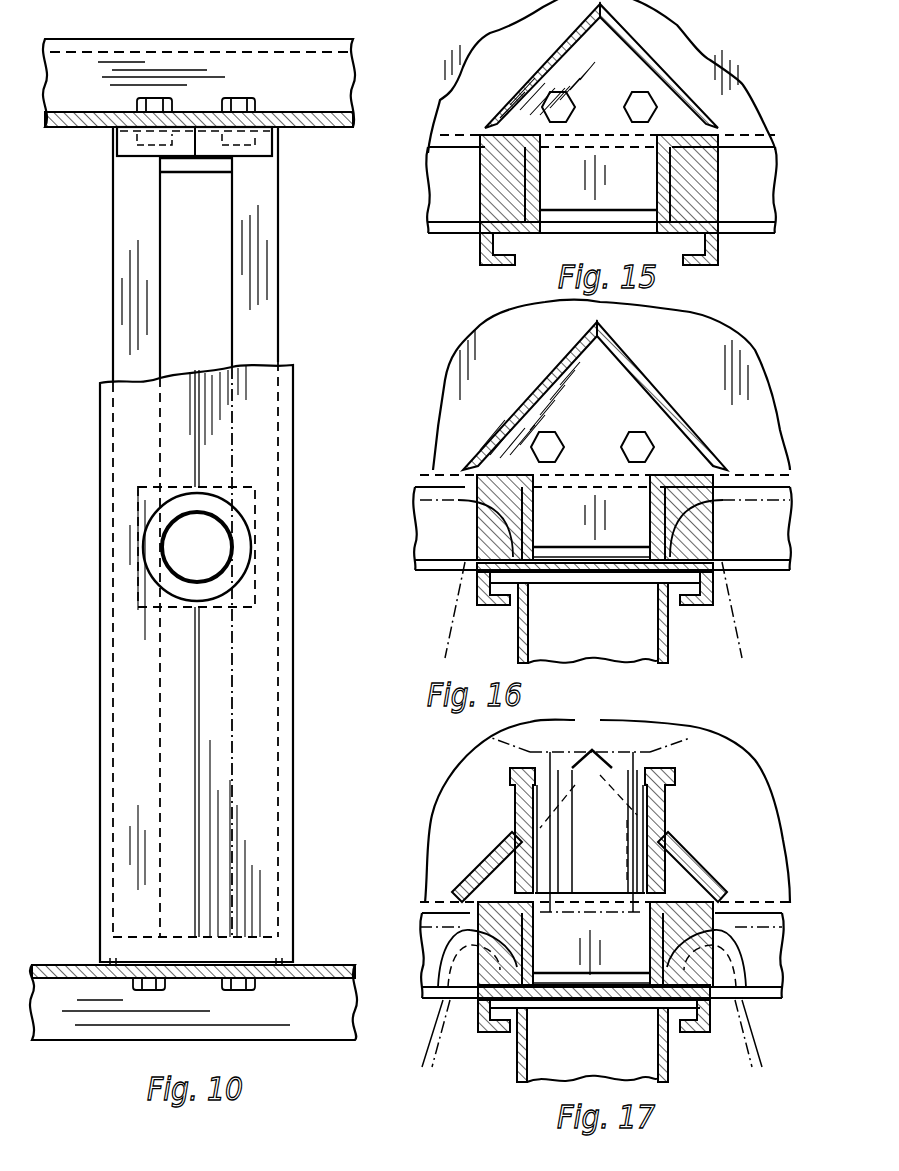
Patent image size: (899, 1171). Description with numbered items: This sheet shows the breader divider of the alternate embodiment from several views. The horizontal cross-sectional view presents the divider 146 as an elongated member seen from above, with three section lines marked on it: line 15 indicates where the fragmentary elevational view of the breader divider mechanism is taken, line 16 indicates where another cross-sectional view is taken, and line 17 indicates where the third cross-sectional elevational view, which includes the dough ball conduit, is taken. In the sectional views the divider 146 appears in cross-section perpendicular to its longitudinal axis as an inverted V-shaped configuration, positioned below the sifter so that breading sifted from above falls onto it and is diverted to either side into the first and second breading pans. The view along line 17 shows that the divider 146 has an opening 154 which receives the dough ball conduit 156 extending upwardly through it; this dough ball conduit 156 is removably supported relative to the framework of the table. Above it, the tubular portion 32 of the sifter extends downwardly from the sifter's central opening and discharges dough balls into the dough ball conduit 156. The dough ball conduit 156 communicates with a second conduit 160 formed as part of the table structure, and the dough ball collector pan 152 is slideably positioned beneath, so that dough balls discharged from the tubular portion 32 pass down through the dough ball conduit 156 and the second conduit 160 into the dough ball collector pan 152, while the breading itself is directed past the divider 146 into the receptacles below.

In FIG. 10, the section line 15- 15 is at (317, 132).
In FIG. 10, the section line 16- 16 is at (340, 397).
In FIG. 10, the section line 17- 17 is at (340, 513).
In FIG. 17, the tubular portion 32 is at (665, 795).
In FIG. 10, the divider 146 is at (132, 685).
In FIG. 16, the divider 146 is at (640, 378).
In FIG. 17, the divider 146 is at (690, 875).
In FIG. 16, the dough ball collector pan 152 is at (668, 637).
In FIG. 17, the dough ball collector pan 152 is at (517, 1068).
In FIG. 10, the opening 154 is at (153, 570).
In FIG. 17, the opening 154 is at (520, 838).
In FIG. 17, the dough ball conduit 156 is at (670, 818).
In FIG. 17, the second conduit 160 is at (523, 955).